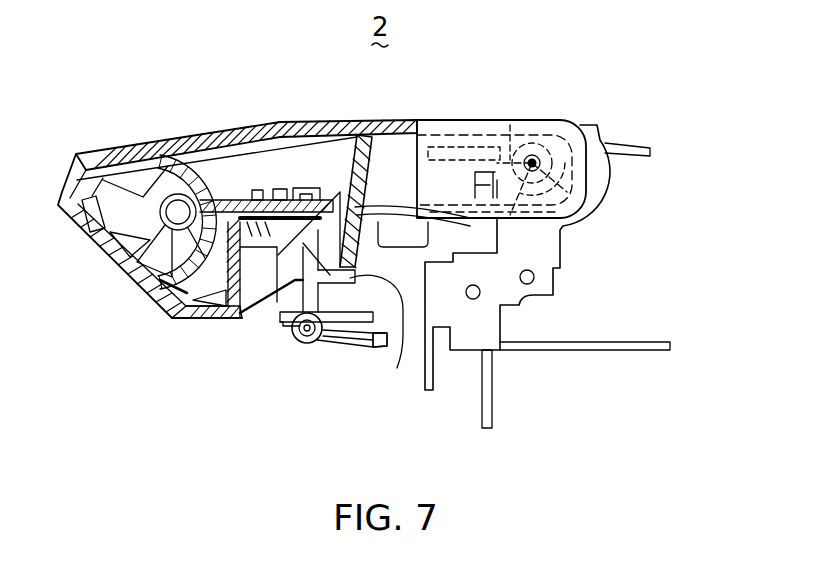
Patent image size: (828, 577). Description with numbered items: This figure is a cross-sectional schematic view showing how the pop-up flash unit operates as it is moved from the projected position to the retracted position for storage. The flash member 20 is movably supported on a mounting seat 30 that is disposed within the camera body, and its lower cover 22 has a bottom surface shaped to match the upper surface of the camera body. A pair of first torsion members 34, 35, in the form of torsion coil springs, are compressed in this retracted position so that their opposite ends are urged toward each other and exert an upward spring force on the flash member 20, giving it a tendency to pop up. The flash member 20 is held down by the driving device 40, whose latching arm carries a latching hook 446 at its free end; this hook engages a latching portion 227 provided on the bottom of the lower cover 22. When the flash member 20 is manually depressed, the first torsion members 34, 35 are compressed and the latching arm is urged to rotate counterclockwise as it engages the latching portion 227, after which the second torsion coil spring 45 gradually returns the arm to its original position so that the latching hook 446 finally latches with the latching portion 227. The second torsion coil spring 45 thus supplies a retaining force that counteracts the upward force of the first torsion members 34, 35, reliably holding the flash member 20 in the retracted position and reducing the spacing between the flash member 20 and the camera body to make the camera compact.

The flash member 20 is at (262, 123).
The lower cover 22 is at (197, 320).
The mounting seat 30 is at (503, 360).
The first torsion member 34 is at (627, 149).
The first torsion member 35 is at (497, 158).
The driving device 40 is at (303, 344).
The second torsion coil spring 45 is at (343, 347).
The latching portion 227 is at (403, 335).
The latching hook 446 is at (295, 281).